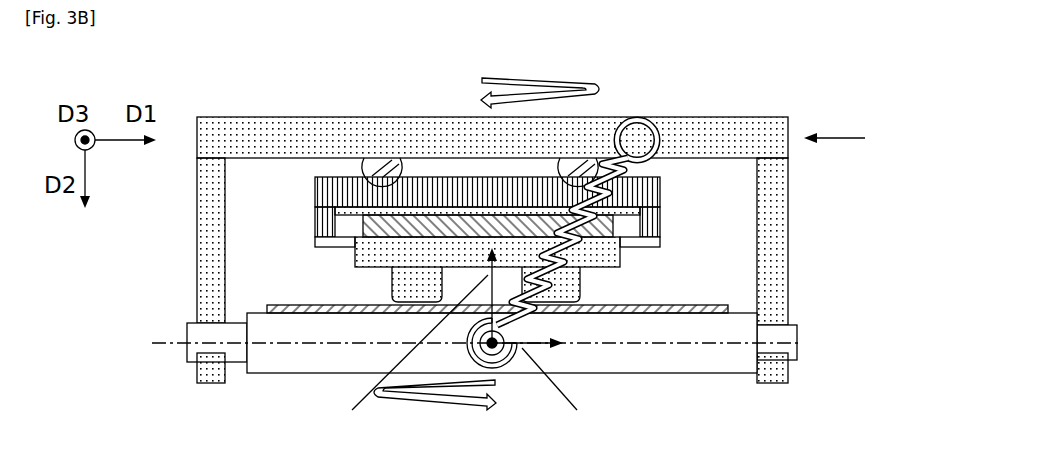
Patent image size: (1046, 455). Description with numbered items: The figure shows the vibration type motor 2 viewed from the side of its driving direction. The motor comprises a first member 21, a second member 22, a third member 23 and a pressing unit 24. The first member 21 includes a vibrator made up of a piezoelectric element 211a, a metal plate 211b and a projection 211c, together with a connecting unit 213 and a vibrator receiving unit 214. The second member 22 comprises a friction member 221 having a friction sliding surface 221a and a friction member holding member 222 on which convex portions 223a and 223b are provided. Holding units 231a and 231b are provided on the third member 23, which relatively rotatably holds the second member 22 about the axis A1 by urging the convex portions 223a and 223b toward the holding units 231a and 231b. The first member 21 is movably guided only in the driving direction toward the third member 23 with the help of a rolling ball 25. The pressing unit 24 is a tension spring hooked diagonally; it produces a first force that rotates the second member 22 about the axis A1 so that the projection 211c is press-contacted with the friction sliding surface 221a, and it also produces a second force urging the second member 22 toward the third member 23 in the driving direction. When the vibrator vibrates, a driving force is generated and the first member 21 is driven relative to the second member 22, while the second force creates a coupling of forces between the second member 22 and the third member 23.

The vibration type motor 2 is at (887, 106).
The first member 21 is at (484, 253).
The second member 22 is at (493, 331).
The third member 23 is at (238, 128).
The pressing unit 24 is at (642, 205).
The rolling ball 25 is at (585, 162).
The piezoelectric element 211a is at (350, 227).
The metal plate 211b is at (357, 257).
The projection 211c is at (400, 302).
The connecting unit 213 is at (357, 240).
The vibrator receiving unit 214 is at (348, 212).
The friction member 221 is at (570, 313).
The friction sliding surface 221a is at (700, 304).
The friction member holding member 222 is at (737, 327).
The convex portion 223a is at (200, 345).
The convex portion 223b is at (790, 343).
The holding unit 231a is at (200, 373).
The holding unit 231b is at (790, 372).
The axis A1 is at (459, 343).